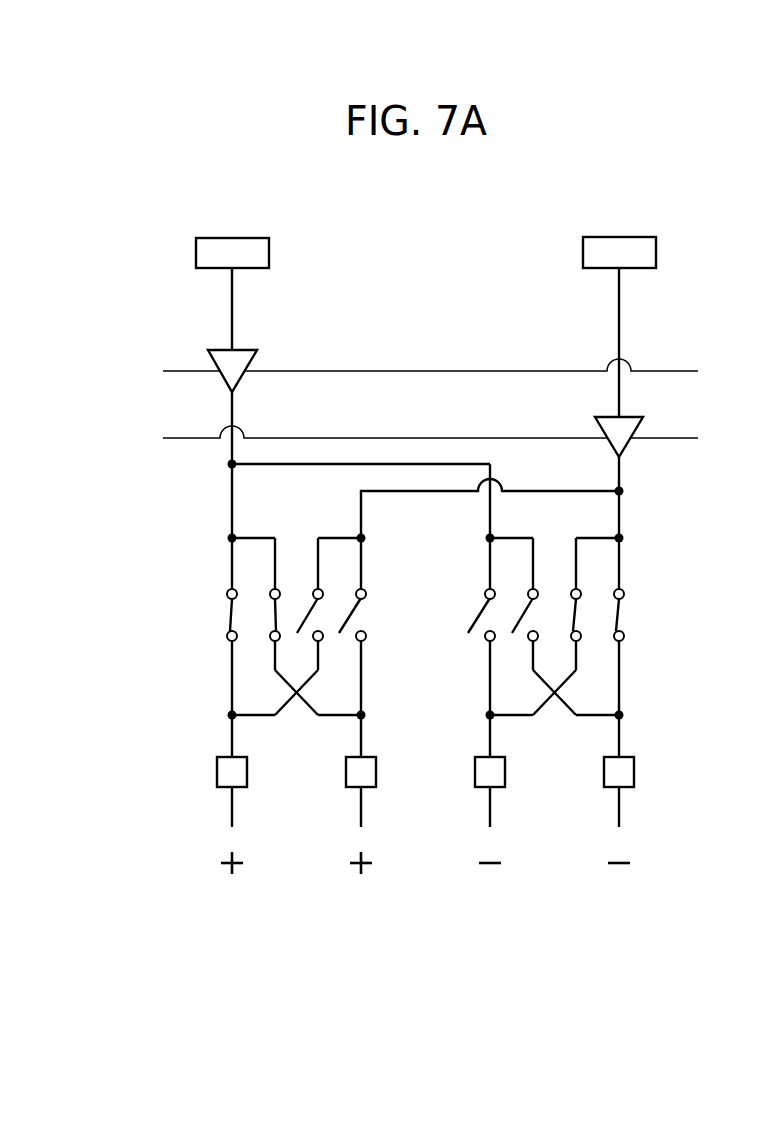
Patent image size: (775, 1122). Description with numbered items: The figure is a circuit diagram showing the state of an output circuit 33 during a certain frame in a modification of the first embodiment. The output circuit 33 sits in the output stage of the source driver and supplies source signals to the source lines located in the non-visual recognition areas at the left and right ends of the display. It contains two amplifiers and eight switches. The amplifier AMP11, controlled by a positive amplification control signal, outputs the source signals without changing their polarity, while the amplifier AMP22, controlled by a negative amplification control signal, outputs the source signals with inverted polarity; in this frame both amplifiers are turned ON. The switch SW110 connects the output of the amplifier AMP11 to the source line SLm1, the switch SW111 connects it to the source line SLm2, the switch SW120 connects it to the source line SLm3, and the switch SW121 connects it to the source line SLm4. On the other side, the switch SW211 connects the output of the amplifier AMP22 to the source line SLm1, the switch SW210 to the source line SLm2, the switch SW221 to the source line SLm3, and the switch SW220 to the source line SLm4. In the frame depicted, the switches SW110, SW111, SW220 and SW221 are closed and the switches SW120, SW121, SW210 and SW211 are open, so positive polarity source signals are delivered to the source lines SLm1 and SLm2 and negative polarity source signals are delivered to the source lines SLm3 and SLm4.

The output circuit 33 is at (693, 267).
The amplifier AMP11 is at (223, 349).
The amplifier AMP22 is at (609, 416).
The switch SW110 is at (228, 613).
The switch SW111 is at (272, 613).
The switch SW210 is at (352, 603).
The switch SW211 is at (308, 607).
The switch SW120 is at (483, 610).
The switch SW121 is at (530, 607).
The switch SW220 is at (620, 614).
The switch SW221 is at (577, 612).
The source line SLm1 is at (232, 812).
The source line SLm2 is at (361, 812).
The source line SLm3 is at (490, 812).
The source line SLm4 is at (619, 812).